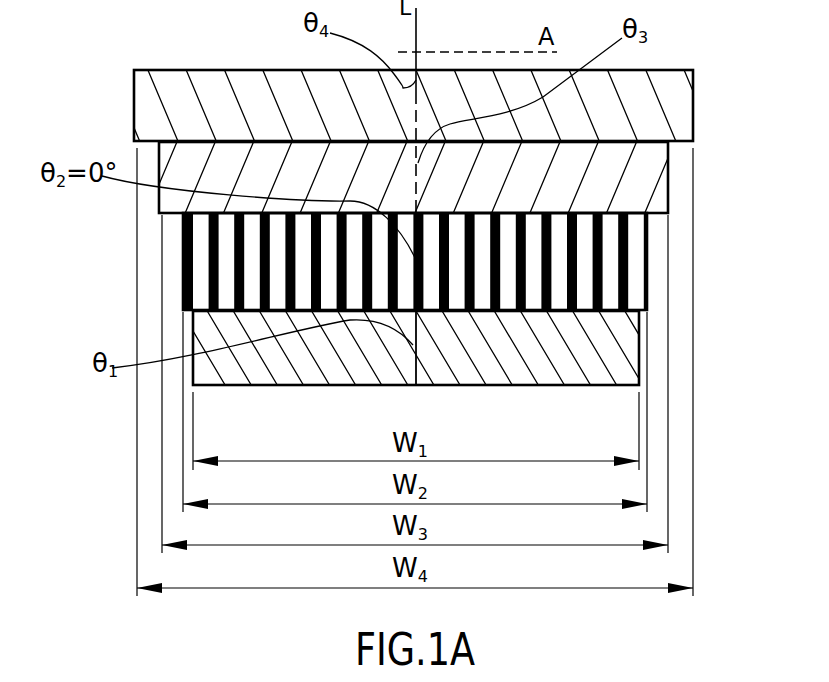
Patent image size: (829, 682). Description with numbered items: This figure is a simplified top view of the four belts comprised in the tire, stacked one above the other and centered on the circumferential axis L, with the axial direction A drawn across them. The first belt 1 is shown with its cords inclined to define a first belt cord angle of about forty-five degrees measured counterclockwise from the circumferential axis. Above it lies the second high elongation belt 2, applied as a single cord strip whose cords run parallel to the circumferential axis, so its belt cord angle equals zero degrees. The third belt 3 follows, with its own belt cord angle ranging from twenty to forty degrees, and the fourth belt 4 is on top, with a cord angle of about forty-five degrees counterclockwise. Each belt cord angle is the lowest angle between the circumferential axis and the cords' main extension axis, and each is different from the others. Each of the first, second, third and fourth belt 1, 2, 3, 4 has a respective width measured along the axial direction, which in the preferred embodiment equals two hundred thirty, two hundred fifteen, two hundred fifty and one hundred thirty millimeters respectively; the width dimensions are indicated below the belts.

The first belt 1 is at (593, 355).
The second high elongation belt 2 is at (605, 273).
The third belt 3 is at (612, 185).
The fourth belt 4 is at (657, 102).